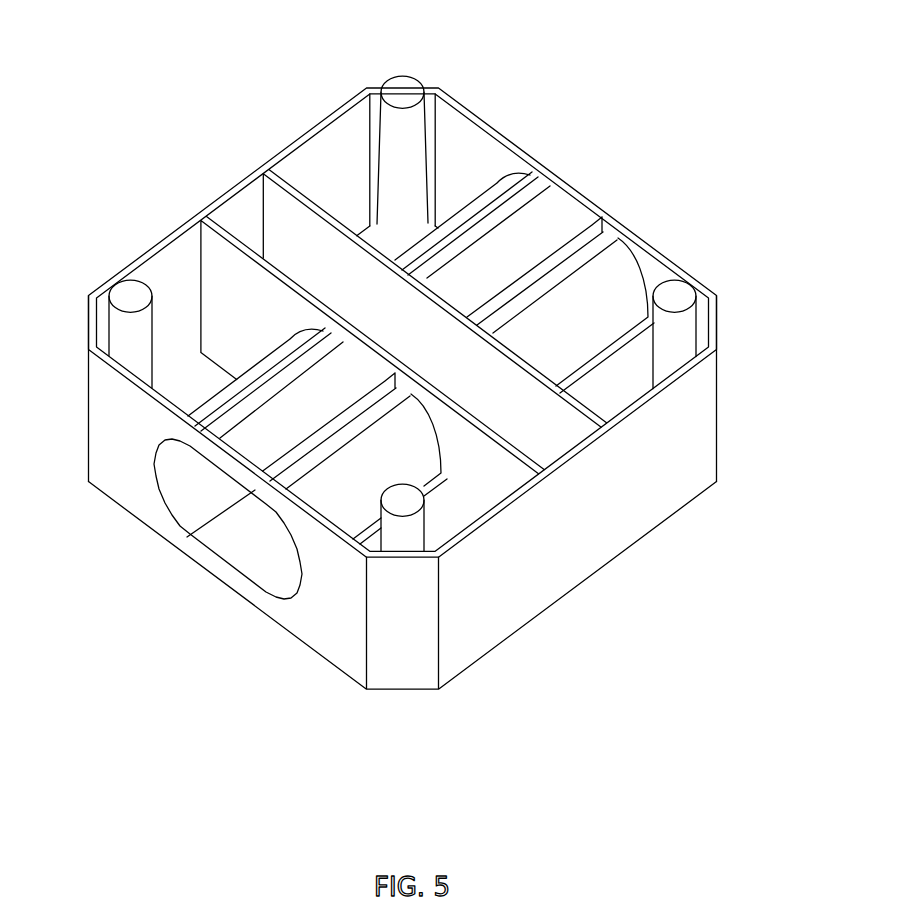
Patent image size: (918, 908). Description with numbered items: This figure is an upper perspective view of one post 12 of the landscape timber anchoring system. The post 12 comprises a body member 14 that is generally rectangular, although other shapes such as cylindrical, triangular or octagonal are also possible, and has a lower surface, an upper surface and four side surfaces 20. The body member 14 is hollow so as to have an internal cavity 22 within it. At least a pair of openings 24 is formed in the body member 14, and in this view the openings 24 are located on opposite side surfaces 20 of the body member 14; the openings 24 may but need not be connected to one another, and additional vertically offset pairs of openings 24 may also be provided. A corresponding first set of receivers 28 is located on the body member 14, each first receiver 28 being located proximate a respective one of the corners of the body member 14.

The post 12 is at (727, 279).
The body member 14 is at (412, 694).
The side surface 20 is at (135, 493).
The internal cavity 22 is at (475, 170).
The opening 24 is at (245, 545).
The first receiver 28 is at (410, 88).